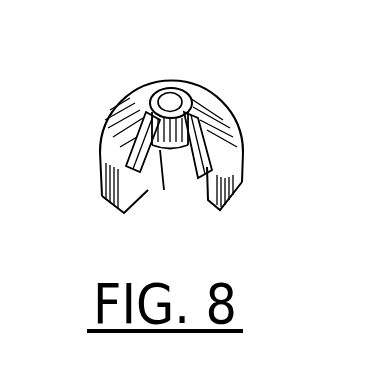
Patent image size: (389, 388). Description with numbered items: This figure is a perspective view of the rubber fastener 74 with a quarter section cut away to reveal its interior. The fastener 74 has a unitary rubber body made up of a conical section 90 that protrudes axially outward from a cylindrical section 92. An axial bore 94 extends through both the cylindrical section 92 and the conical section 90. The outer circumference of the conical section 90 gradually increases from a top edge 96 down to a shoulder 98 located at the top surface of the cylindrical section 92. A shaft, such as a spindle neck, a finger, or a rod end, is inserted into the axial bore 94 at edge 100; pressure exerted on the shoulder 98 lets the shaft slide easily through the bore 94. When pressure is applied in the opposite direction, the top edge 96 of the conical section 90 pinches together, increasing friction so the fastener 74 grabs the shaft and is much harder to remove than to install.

The rubber fastener 74 is at (240, 118).
The conical section 90 is at (207, 103).
The cylindrical section 92 is at (225, 200).
The axial bore 94 is at (180, 90).
The top edge 96 is at (160, 92).
The shoulder 98 is at (237, 182).
The edge 100 is at (166, 150).